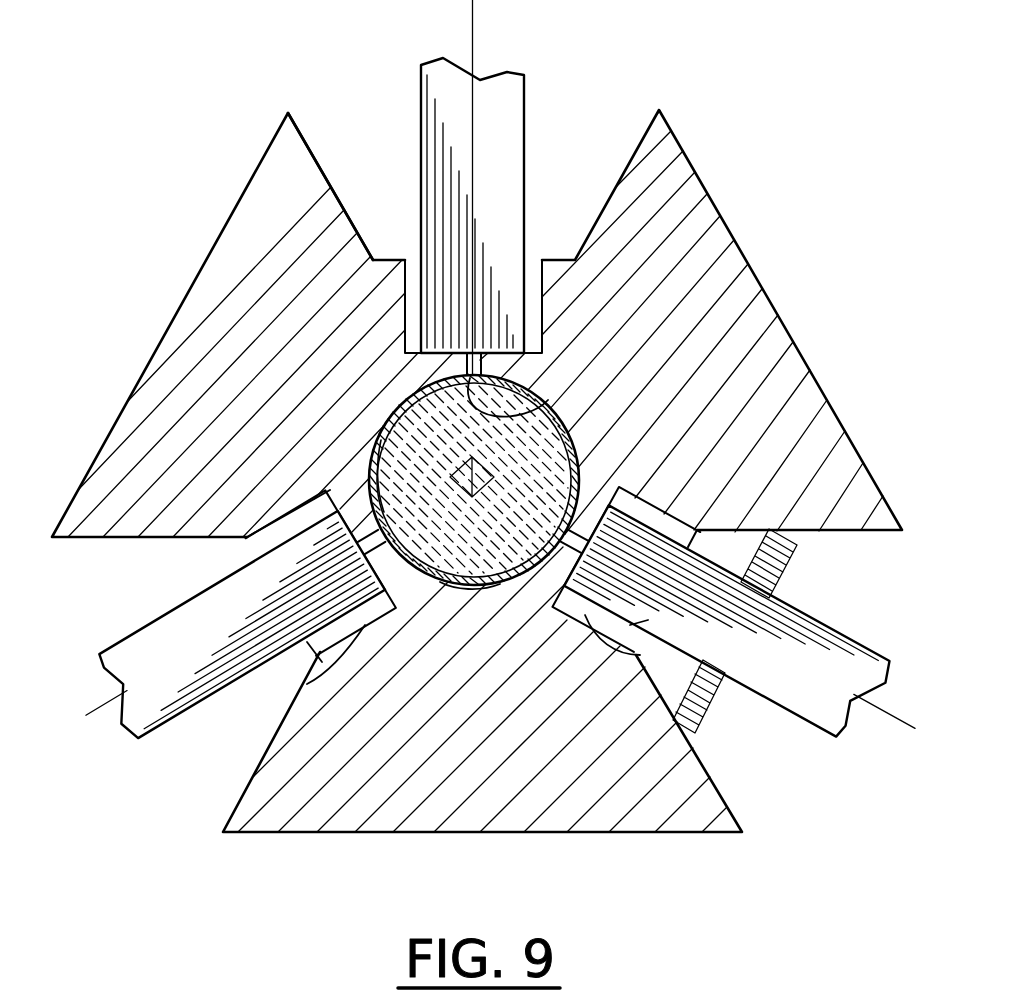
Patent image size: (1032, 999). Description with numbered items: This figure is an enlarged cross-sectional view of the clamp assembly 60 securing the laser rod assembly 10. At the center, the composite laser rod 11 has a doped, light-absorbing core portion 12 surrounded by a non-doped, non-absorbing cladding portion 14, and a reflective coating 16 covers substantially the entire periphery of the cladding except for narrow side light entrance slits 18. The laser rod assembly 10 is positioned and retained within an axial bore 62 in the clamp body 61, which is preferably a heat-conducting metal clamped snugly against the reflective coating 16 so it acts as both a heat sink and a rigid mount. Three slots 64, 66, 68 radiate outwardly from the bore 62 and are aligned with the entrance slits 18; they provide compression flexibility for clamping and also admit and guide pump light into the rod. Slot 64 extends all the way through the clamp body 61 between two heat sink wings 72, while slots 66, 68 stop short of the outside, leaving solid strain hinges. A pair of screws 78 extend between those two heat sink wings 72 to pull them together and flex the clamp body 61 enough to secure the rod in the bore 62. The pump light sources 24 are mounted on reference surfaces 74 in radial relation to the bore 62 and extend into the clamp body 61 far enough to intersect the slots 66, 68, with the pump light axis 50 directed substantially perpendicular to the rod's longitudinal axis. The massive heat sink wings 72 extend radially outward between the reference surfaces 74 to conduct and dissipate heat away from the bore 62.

The laser rod assembly 10 is at (580, 424).
The composite laser rod 11 is at (584, 457).
The core portion 12 is at (419, 451).
The cladding portion 14 is at (454, 469).
The reflective coating 16 is at (565, 466).
The side light entrance slits 18 is at (568, 402).
The pump light sources 24 is at (95, 567).
The axis 50 is at (474, 46).
The clamp assembly 60 is at (483, 438).
The clamp body 61 is at (318, 167).
The axial bore 62 is at (462, 582).
The slot 64 is at (693, 545).
The slot 66 is at (478, 352).
The slot 68 is at (375, 545).
The heat sink wings 72 is at (187, 298).
The reference surfaces 74 is at (578, 257).
The screws 78 is at (690, 720).